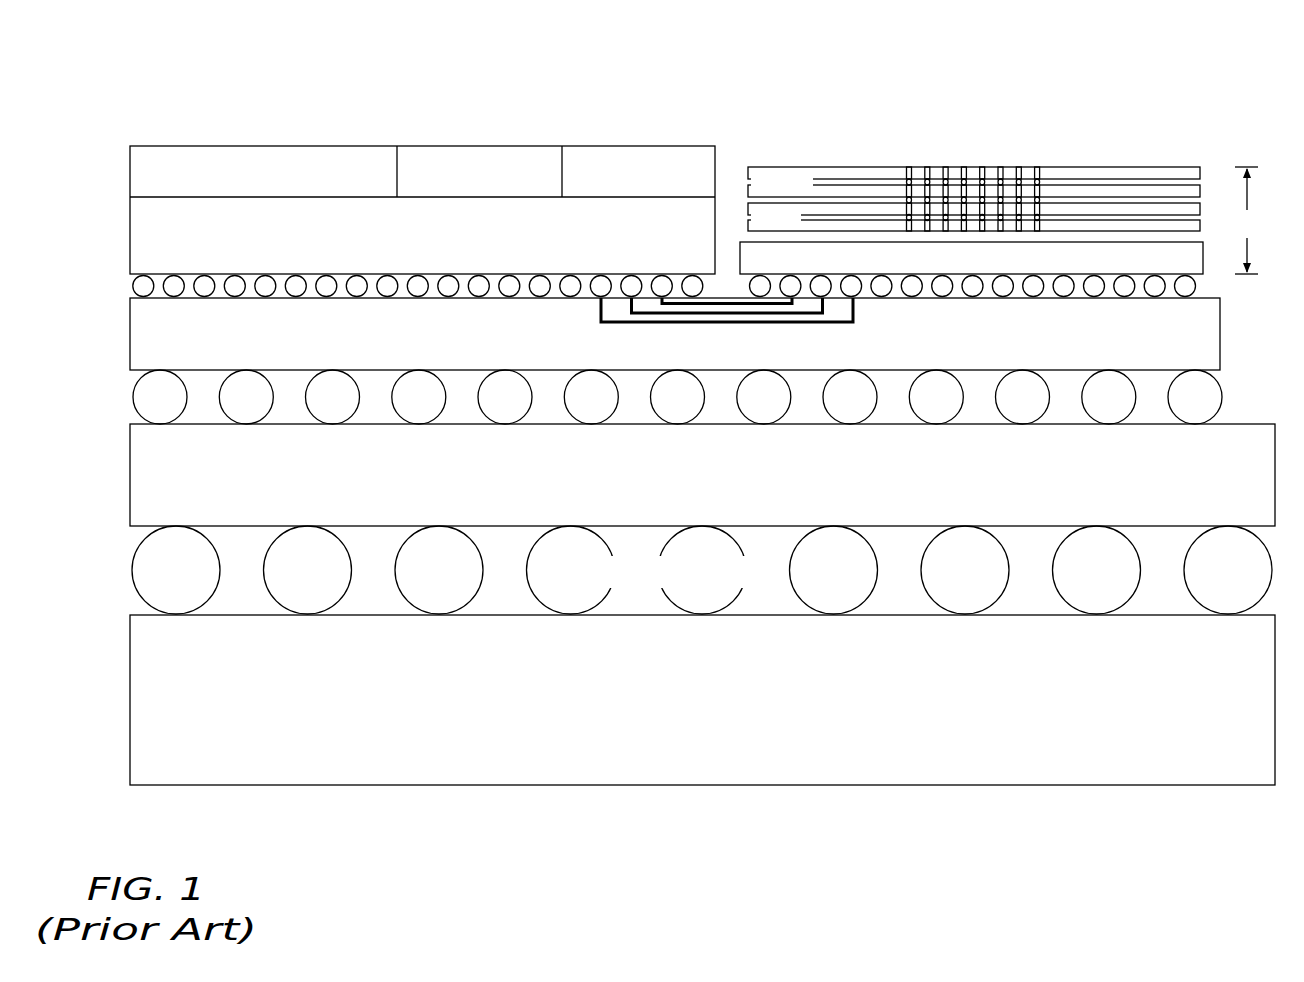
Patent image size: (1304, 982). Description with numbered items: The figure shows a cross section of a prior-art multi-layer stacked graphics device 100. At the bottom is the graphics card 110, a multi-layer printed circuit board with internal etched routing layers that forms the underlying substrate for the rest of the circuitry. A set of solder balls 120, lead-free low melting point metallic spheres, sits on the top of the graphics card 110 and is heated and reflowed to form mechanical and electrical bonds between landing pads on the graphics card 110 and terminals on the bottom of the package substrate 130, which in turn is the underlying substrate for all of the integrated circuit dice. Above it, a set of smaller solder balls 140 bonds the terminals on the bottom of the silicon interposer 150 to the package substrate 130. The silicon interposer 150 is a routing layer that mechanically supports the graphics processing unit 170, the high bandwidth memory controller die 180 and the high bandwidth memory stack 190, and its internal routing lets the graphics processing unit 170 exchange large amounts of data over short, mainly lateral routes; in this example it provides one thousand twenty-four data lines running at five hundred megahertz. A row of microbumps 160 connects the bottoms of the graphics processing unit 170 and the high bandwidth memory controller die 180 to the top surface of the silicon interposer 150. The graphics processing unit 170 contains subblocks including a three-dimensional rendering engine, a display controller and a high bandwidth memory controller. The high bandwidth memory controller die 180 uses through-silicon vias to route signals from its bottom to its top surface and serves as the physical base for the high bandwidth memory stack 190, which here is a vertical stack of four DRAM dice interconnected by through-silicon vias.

The multi-layer stacked graphics device 100 is at (96, 61).
The graphics card 110 is at (130, 715).
The solder balls 120 is at (118, 565).
The package substrate 130 is at (130, 485).
The solder balls 140 is at (118, 397).
The silicon interposer 150 is at (130, 340).
The microbumps 160 is at (117, 284).
The graphics processing unit 170 is at (130, 230).
The high bandwidth memory controller die 180 is at (1204, 266).
The high bandwidth memory stack 190 is at (1212, 166).